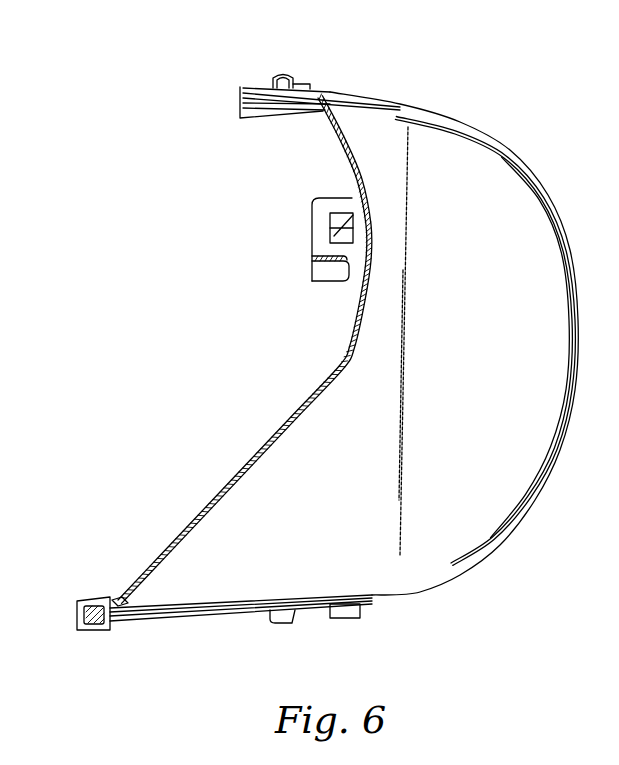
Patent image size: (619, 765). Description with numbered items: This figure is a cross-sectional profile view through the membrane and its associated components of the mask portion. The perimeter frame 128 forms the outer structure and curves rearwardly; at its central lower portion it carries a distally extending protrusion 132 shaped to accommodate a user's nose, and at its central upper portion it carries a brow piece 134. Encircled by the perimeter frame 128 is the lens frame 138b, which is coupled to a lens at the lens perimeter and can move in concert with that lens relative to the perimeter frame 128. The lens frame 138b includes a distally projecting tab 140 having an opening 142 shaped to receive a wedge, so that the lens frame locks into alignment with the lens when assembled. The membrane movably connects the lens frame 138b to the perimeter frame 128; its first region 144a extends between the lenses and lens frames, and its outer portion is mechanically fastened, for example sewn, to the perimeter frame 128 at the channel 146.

The perimeter frame 128 is at (240, 74).
The protrusion 132 is at (79, 601).
The brow piece 134 is at (241, 91).
The lens frame 138b is at (358, 297).
The tab 140 is at (320, 229).
The opening 142 is at (353, 226).
The first region 144a is at (257, 457).
The channel 146 is at (118, 630).